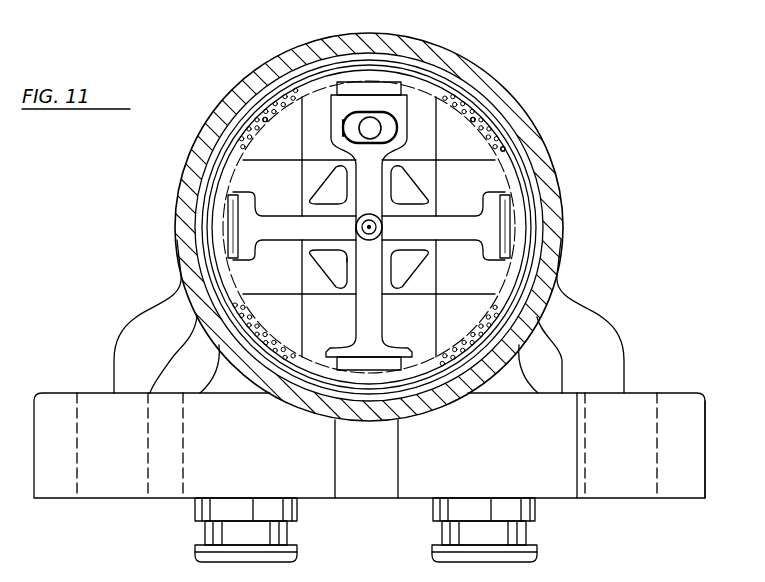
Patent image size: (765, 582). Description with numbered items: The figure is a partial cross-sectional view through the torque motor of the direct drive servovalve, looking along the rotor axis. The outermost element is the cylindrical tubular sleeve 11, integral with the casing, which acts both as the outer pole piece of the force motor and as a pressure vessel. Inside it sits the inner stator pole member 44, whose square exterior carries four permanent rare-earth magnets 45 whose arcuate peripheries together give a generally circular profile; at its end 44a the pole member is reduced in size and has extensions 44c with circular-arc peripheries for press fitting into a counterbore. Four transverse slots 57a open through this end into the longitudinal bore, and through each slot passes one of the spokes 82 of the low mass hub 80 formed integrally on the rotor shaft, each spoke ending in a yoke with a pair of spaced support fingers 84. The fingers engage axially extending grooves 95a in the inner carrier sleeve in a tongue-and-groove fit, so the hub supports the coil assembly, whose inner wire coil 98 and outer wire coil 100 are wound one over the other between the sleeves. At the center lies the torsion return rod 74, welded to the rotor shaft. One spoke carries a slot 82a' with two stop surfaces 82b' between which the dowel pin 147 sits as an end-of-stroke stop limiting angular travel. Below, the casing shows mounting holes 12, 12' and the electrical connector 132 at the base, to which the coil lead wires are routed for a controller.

The cylindrical tubular sleeve 11 is at (492, 135).
The mounting holes 12 is at (369, 389).
The base (second part) 12' is at (657, 464).
The inner stator pole member 44 is at (465, 203).
The end of inner pole member 44a is at (502, 133).
The extensions 44c is at (325, 180).
The permanent rare-earth magnets 45 is at (290, 191).
The transverse slots 57a is at (320, 256).
The torsion return rod 74 is at (383, 229).
The low mass hub 80 is at (345, 233).
The spokes 82 is at (308, 235).
The slot 82a' is at (370, 76).
The stop surfaces 82b' is at (355, 82).
The support fingers 84 is at (333, 86).
The axially extending groove 95a is at (402, 62).
The inner wire coil 98 is at (255, 362).
The outer wire coil 100 is at (283, 352).
The electrical connector 132 is at (433, 518).
The dowel pin 147 is at (343, 125).